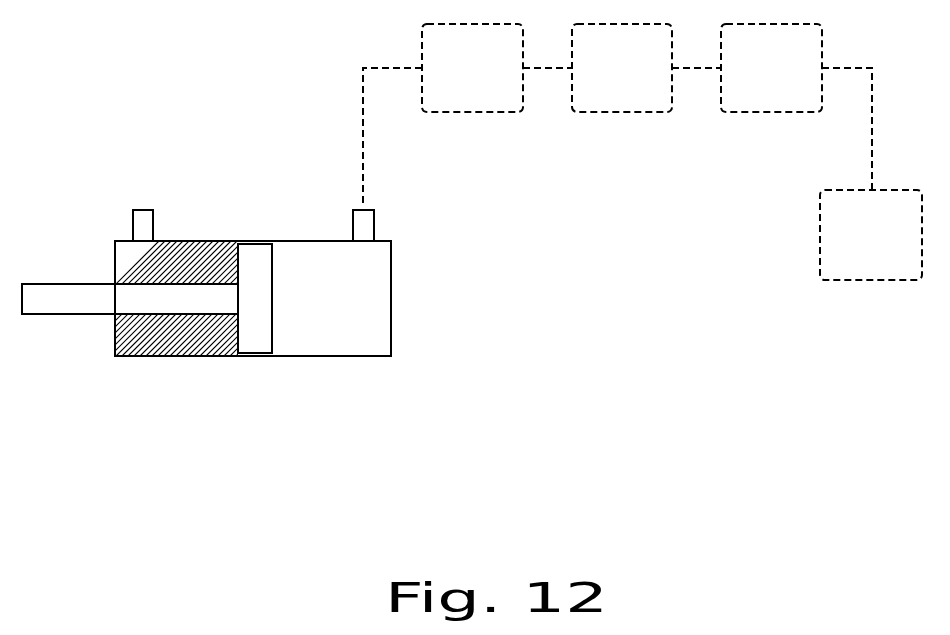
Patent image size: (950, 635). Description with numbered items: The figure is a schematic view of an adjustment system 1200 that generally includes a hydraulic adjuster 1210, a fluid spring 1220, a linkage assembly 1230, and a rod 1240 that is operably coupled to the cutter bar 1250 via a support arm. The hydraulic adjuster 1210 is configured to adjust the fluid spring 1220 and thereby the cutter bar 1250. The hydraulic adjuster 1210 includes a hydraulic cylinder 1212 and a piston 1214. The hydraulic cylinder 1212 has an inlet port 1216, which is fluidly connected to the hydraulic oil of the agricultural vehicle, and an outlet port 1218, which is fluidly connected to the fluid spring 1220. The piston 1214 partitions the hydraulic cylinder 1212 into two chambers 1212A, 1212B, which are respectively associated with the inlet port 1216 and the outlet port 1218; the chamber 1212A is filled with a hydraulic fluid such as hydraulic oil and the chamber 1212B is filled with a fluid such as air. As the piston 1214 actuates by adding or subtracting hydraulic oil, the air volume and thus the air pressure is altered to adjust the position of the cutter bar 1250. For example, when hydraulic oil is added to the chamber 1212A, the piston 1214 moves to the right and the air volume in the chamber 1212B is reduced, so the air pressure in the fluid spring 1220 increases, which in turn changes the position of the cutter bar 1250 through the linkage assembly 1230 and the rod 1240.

The adjustment system 1200 is at (463, 261).
The hydraulic adjuster 1210 is at (258, 322).
The hydraulic cylinder 1212 is at (258, 264).
The chamber 1212A is at (133, 338).
The chamber 1212B is at (373, 314).
The piston 1214 is at (253, 354).
The inlet port 1216 is at (133, 237).
The outlet port 1218 is at (375, 222).
The fluid spring 1220 is at (472, 68).
The linkage assembly 1230 is at (622, 68).
The rod 1240 is at (771, 68).
The cutter bar 1250 is at (871, 235).